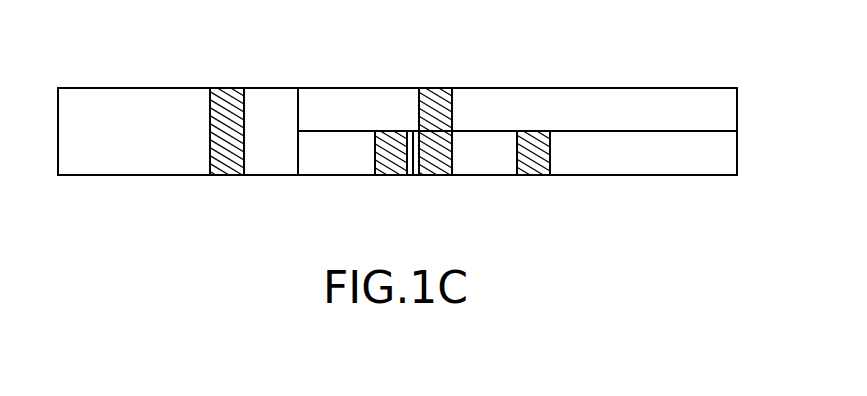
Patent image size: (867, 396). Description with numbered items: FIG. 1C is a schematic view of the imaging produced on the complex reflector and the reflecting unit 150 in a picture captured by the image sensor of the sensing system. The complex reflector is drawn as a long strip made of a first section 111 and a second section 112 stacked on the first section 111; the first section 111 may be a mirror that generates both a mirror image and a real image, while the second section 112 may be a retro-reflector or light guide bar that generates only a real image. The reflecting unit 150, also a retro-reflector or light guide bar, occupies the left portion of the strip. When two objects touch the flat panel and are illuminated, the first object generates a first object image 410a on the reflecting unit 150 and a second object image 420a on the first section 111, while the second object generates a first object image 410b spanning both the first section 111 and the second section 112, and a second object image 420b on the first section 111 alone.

The reflecting unit 150 is at (110, 103).
The second section 112 is at (727, 109).
The first section 111 is at (727, 154).
The first object image 410a is at (225, 102).
The first object image 410b is at (435, 102).
The second object image 420a is at (392, 162).
The second object image 420b is at (533, 162).